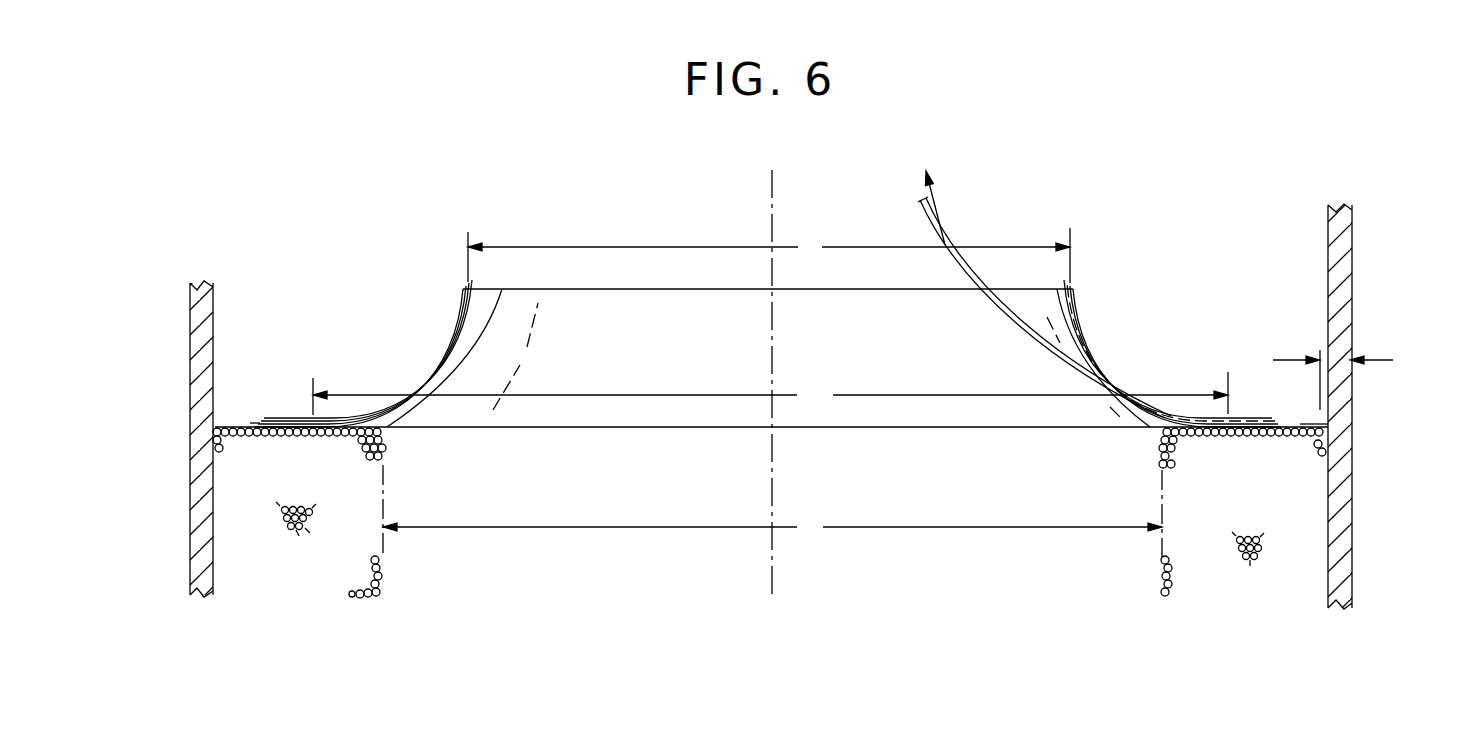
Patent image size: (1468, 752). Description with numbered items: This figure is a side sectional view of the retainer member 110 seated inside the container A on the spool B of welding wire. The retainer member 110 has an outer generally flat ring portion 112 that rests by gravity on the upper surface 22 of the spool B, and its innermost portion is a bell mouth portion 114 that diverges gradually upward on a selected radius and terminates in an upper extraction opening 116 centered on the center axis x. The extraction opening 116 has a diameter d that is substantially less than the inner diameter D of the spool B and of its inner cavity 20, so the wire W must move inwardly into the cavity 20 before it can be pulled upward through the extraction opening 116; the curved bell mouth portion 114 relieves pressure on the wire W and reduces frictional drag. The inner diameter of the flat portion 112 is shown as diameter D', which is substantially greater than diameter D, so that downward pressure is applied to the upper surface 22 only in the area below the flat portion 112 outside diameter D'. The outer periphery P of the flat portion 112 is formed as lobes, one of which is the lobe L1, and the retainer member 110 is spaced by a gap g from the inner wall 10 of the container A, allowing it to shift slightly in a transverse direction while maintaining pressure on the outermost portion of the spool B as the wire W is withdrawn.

The inner wall 10 is at (1325, 240).
The inner cavity 20 is at (380, 572).
The upper surface 22 is at (250, 421).
The retainer member 110 is at (1098, 326).
The flat ring portion 112 is at (1275, 434).
The bell mouth portion 114 is at (460, 317).
The extraction opening 116 is at (660, 295).
The container A is at (185, 560).
The spool B is at (1170, 568).
The outer periphery P is at (253, 418).
The wire W is at (932, 233).
The lobe L1 is at (1327, 418).
The center x is at (773, 205).
The diameter of extraction opening d is at (769, 255).
The inner diameter of spool D is at (772, 512).
The inner diameter of flat portion D' is at (770, 393).
The gap g is at (1344, 378).